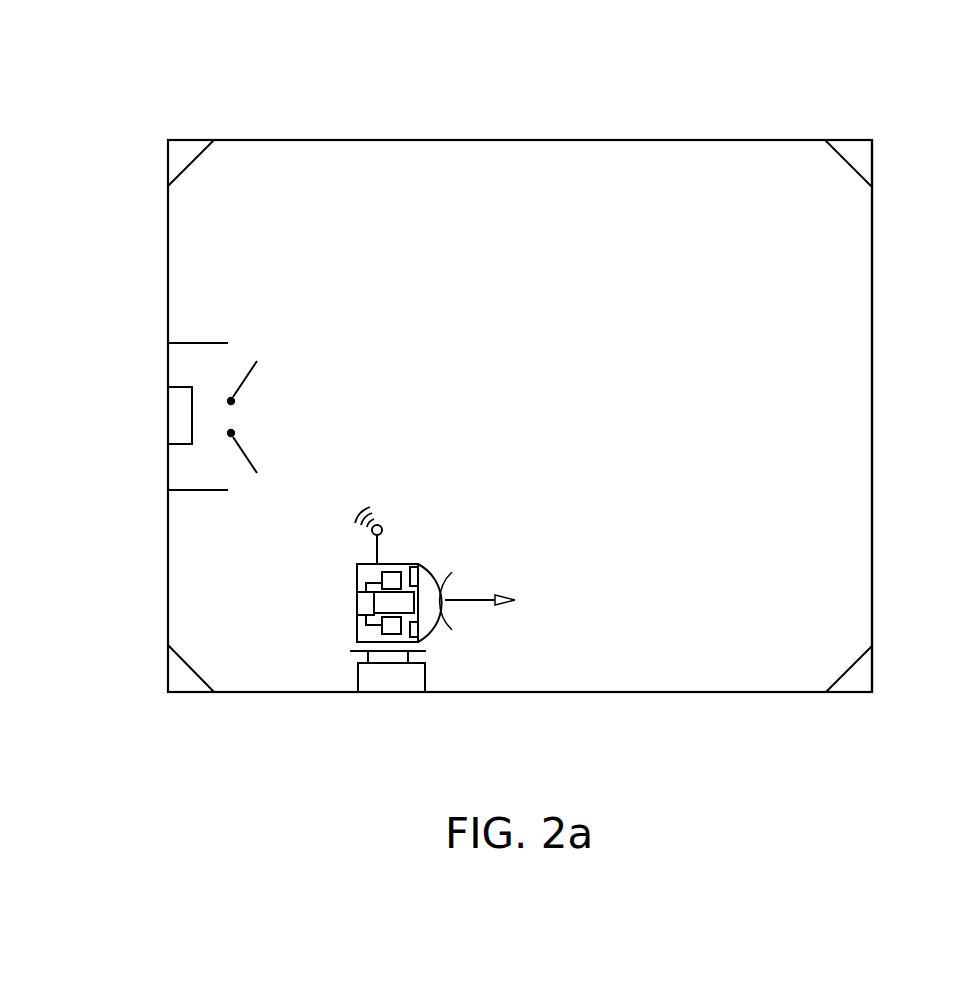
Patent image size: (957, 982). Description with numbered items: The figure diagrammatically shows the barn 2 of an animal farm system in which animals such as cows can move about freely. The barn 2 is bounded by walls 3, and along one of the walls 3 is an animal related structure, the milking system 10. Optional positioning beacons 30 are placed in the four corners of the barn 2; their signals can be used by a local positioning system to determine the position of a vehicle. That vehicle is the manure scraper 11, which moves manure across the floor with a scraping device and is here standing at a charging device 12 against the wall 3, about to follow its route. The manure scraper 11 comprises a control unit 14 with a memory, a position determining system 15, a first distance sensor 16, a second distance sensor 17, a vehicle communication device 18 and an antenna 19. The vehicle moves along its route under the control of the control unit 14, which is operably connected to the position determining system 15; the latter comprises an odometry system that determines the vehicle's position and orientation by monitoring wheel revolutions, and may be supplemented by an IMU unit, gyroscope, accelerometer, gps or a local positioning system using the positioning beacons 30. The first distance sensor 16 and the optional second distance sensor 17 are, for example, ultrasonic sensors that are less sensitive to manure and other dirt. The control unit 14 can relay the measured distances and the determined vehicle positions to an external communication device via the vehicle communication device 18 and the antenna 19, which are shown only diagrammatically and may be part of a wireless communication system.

The barn 2 is at (574, 318).
The walls 3 is at (872, 465).
The milking system 10 is at (196, 383).
The manure scraper 11 is at (419, 594).
The charging device 12 is at (385, 677).
The control unit 14 is at (365, 604).
The position determining system 15 is at (391, 625).
The first distance sensor 16 is at (414, 573).
The second distance sensor 17 is at (414, 628).
The vehicle communication device 18 is at (391, 580).
The antenna 19 is at (377, 550).
The positioning beacons 30 is at (183, 153).